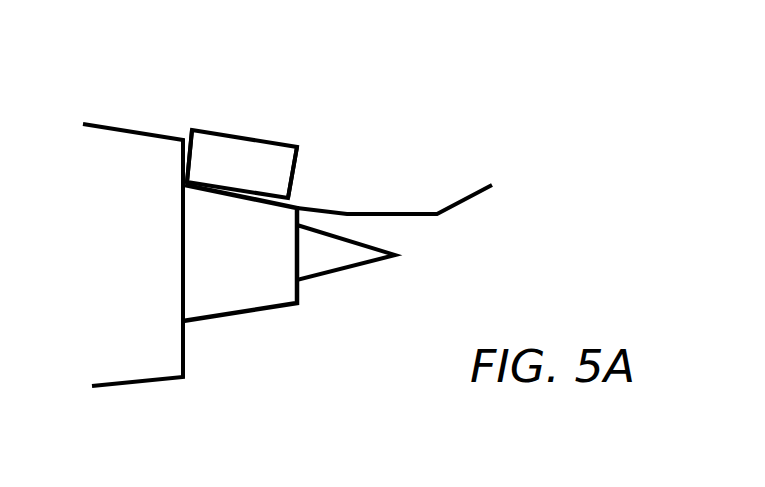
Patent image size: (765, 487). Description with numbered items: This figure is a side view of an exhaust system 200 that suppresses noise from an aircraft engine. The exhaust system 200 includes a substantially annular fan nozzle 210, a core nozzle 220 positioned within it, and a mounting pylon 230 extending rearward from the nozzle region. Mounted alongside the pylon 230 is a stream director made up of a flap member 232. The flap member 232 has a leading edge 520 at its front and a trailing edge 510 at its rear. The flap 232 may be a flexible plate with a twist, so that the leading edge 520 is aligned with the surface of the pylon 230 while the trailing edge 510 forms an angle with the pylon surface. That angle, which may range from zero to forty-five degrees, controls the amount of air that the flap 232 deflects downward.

The exhaust system 200 is at (530, 56).
The fan nozzle 210 is at (158, 371).
The core nozzle 220 is at (283, 298).
The mounting pylon 230 is at (447, 207).
The flap member 232 is at (250, 148).
The trailing edge 510 is at (302, 174).
The leading edge 520 is at (190, 130).